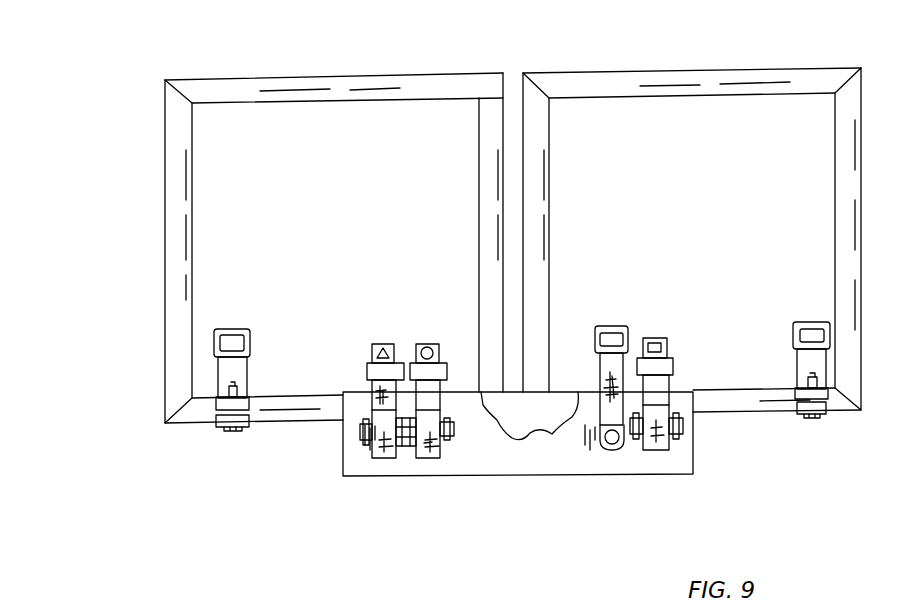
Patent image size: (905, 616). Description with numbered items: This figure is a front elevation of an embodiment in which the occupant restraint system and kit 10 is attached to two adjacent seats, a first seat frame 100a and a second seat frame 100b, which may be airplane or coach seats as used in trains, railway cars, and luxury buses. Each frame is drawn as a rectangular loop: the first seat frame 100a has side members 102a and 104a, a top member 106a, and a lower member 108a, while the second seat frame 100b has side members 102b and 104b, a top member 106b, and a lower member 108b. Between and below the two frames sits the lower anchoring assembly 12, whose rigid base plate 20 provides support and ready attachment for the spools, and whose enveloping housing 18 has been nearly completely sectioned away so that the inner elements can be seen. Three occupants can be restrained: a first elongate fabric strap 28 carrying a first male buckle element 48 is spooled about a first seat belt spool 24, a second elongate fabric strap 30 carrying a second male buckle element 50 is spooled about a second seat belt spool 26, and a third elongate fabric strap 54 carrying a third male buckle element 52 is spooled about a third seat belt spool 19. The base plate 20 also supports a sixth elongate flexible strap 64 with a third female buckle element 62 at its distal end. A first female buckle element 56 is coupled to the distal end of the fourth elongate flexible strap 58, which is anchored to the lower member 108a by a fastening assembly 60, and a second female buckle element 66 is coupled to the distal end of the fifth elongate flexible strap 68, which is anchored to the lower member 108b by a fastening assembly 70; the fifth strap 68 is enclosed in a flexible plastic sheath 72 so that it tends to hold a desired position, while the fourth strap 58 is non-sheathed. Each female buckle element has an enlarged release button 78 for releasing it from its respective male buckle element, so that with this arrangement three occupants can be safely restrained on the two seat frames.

The occupant restraint system and kit 10 is at (325, 447).
The lower anchoring assembly 12 is at (416, 490).
The enveloping housing 18 is at (545, 436).
The third seat belt spool 19 is at (437, 458).
The base plate 20 is at (376, 470).
The first seat belt spool 24 is at (395, 458).
The second seat belt spool 26 is at (651, 450).
The first elongate fabric strap 28 is at (371, 383).
The second elongate fabric strap 30 is at (672, 372).
The first male buckle element 48 is at (352, 392).
The second male buckle element 50 is at (670, 392).
The third male buckle element 52 is at (461, 392).
The third elongate fabric strap 54 is at (438, 375).
The first female buckle element 56 is at (157, 313).
The fourth elongate fabric strip 58 is at (218, 366).
The fastening assembly 60 is at (222, 428).
The third female buckle element 62 is at (596, 392).
The sixth elongate flexible strap 64 is at (600, 440).
The second female buckle element 66 is at (800, 323).
The fifth elongate fabric strip 68 is at (812, 413).
The fastening assembly 70 is at (810, 420).
The flexible plastic sheath 72 is at (815, 383).
The enlarged release button 78 is at (220, 342).
The first seat frame 100a is at (332, 62).
The second seat frame 100b is at (805, 62).
The left frame member 102a is at (164, 126).
The left frame member 102b is at (550, 142).
The right frame member 104a is at (478, 142).
The right frame member 104b is at (835, 233).
The top frame member 106a is at (397, 73).
The top frame member 106b is at (600, 72).
The lower member 108a is at (266, 424).
The lower member 108b is at (745, 413).